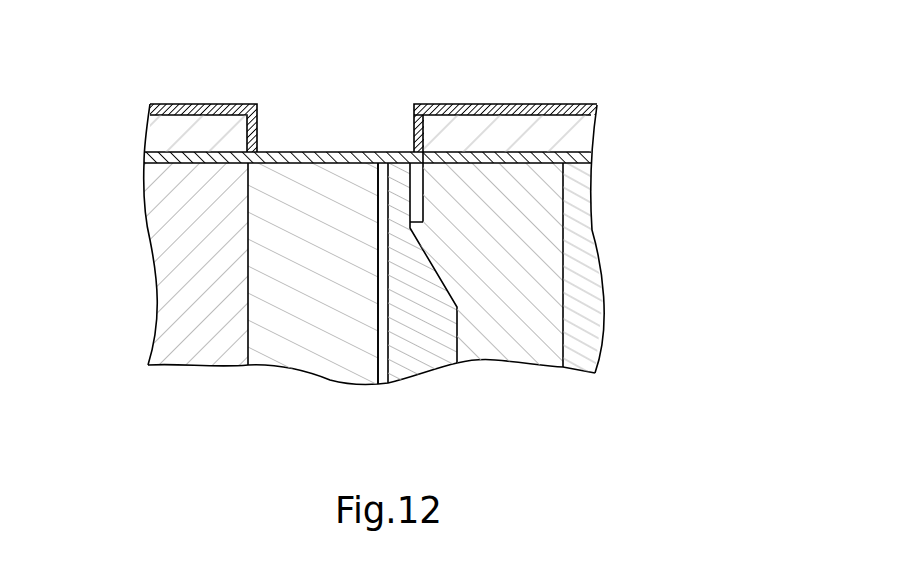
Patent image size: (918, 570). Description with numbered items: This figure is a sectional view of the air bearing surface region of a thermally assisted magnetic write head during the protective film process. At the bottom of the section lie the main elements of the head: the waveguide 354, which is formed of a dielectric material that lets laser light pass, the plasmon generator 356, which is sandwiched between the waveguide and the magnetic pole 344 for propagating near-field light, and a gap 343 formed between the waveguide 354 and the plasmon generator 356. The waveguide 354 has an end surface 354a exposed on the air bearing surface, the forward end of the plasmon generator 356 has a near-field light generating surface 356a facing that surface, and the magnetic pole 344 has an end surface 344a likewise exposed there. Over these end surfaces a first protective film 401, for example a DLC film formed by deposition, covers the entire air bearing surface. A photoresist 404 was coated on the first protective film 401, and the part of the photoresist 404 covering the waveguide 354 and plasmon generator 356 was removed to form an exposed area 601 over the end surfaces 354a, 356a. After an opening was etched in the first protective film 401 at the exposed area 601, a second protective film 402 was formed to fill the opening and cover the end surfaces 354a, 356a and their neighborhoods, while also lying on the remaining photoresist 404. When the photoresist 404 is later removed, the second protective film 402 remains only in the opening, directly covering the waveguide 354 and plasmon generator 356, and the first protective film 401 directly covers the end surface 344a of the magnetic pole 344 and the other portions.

The gap 343 is at (383, 373).
The magnetic pole 344 is at (513, 348).
The end surface of the magnetic pole 344a is at (503, 165).
The waveguide 354 is at (303, 337).
The end surface of the waveguide 354a is at (285, 163).
The plasmon generator 356 is at (423, 355).
The near-field light generating surface 356a is at (402, 162).
The first protective film 401 is at (152, 157).
The second protective film 402 is at (195, 108).
The photoresist 404 is at (163, 136).
The exposed area 601 is at (340, 133).